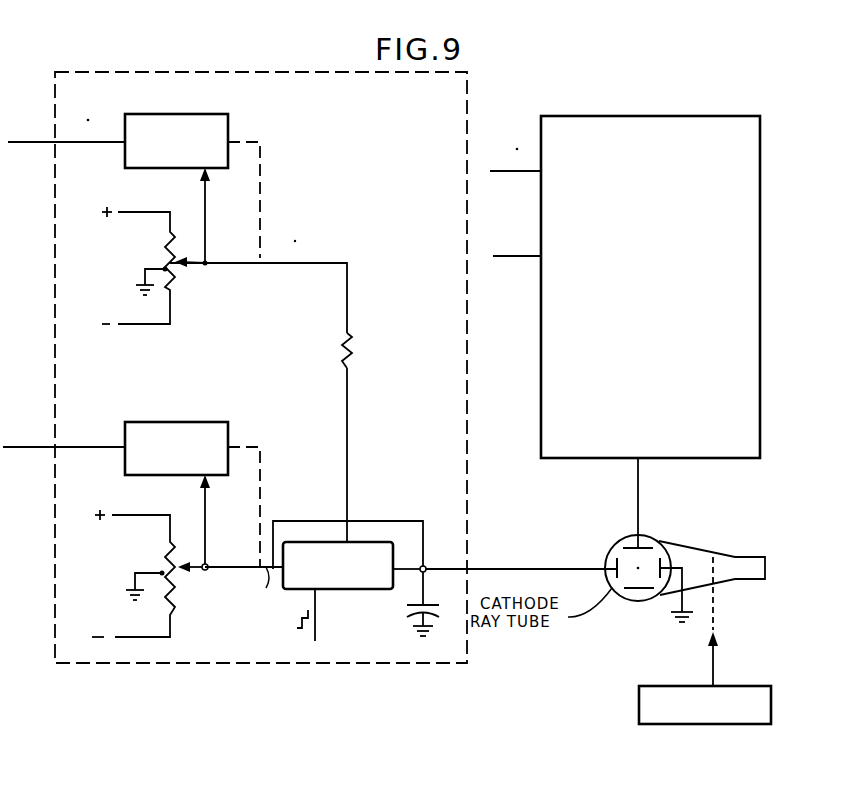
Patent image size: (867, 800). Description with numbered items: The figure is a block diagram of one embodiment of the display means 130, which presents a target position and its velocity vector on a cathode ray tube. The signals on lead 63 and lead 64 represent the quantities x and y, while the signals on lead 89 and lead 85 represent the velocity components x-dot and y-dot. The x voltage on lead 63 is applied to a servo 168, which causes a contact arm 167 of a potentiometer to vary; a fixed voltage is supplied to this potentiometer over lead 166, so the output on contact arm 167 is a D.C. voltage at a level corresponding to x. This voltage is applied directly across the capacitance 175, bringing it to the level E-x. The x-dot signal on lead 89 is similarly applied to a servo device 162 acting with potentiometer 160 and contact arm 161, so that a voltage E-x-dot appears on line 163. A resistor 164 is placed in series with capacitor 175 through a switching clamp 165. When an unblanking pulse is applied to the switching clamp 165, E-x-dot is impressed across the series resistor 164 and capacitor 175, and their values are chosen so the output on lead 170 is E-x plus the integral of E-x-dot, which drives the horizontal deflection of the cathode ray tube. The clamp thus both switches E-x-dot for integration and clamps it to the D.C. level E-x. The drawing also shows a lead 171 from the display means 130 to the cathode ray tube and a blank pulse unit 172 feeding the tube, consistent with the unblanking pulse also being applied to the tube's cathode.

The lead 89 is at (42, 142).
The display means 130 is at (270, 72).
The servo device 162 is at (229, 120).
The potentiometer 160 is at (170, 228).
The contact arm 161 is at (192, 268).
The line 163 is at (348, 300).
The resistor 164 is at (352, 349).
The lead 63 is at (36, 447).
The servo 168 is at (212, 422).
The lead 166 is at (165, 515).
The contact arm 167 is at (192, 570).
The switching clamp 165 is at (364, 530).
The lead 170 is at (486, 569).
The capacitance 175 is at (416, 612).
The lead from unit 130 to cathode ray tube 171 is at (639, 497).
The blank pulse generator 172 is at (670, 686).
The lead 85 is at (525, 173).
The lead 64 is at (523, 258).